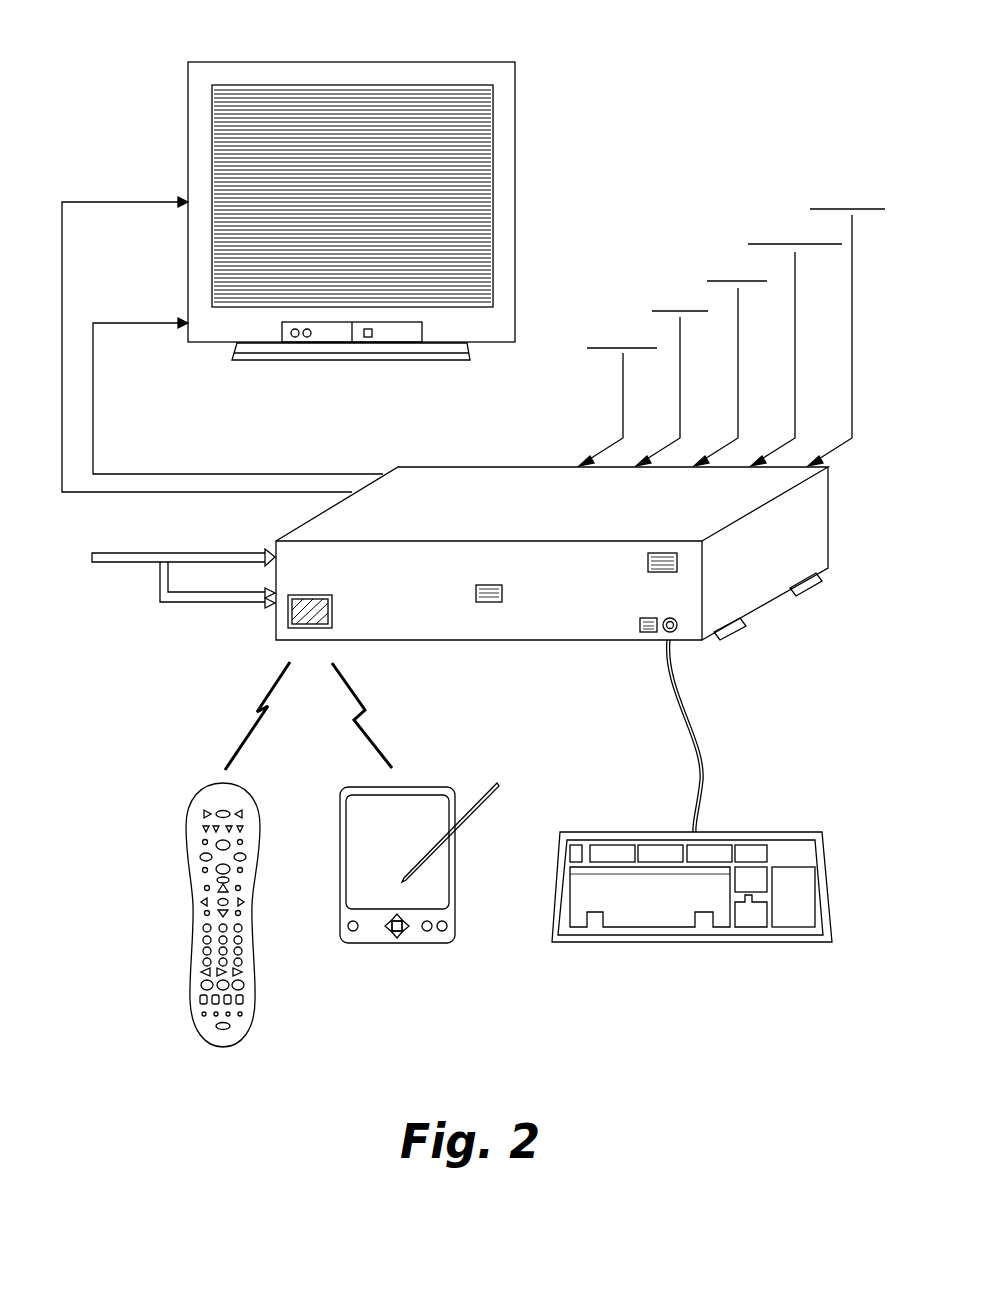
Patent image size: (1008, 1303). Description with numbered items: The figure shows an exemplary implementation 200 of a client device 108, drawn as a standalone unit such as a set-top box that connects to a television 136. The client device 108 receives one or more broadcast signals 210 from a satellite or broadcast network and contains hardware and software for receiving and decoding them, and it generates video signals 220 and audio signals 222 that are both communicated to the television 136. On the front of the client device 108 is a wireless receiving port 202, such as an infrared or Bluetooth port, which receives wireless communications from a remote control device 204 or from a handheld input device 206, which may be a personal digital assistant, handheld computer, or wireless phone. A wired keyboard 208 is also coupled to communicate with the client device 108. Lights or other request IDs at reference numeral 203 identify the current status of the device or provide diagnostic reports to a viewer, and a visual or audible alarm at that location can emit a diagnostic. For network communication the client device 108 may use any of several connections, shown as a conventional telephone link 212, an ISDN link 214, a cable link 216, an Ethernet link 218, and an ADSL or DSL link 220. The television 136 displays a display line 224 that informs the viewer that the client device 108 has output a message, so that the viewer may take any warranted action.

The exemplary implementation 200 is at (787, 55).
The display line 224 is at (497, 290).
The television 136 is at (508, 341).
The ADSL and/or DSL link / video signal 220 is at (150, 233).
The audio signal 222 is at (150, 356).
The telephone link 212 is at (623, 308).
The ISDN link 214 is at (680, 272).
The cable link 216 is at (737, 240).
The Ethernet link 218 is at (795, 205).
The client device 108 is at (462, 466).
The wireless receiving port 202 is at (323, 595).
The lights or request IDs 203 is at (502, 585).
The broadcast signals 210 is at (145, 565).
The remote control device 204 is at (190, 810).
The handheld input device 206 is at (415, 787).
The wired keyboard 208 is at (735, 832).